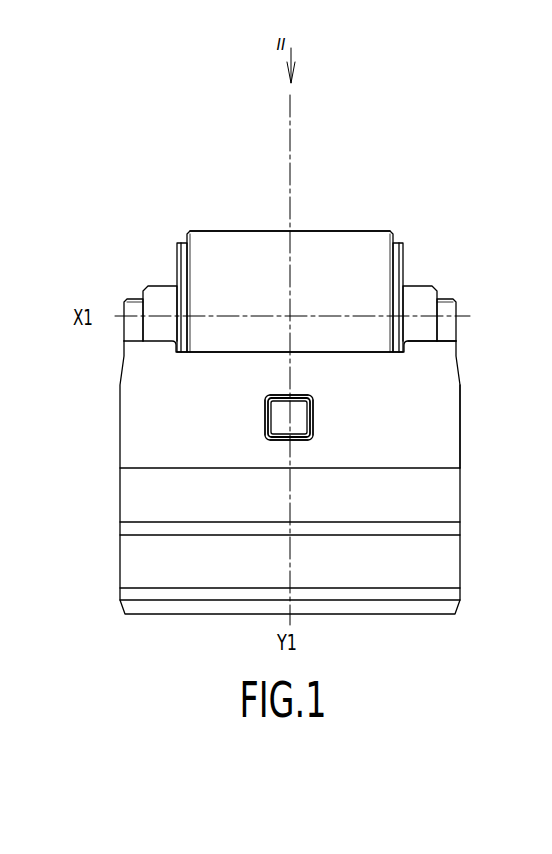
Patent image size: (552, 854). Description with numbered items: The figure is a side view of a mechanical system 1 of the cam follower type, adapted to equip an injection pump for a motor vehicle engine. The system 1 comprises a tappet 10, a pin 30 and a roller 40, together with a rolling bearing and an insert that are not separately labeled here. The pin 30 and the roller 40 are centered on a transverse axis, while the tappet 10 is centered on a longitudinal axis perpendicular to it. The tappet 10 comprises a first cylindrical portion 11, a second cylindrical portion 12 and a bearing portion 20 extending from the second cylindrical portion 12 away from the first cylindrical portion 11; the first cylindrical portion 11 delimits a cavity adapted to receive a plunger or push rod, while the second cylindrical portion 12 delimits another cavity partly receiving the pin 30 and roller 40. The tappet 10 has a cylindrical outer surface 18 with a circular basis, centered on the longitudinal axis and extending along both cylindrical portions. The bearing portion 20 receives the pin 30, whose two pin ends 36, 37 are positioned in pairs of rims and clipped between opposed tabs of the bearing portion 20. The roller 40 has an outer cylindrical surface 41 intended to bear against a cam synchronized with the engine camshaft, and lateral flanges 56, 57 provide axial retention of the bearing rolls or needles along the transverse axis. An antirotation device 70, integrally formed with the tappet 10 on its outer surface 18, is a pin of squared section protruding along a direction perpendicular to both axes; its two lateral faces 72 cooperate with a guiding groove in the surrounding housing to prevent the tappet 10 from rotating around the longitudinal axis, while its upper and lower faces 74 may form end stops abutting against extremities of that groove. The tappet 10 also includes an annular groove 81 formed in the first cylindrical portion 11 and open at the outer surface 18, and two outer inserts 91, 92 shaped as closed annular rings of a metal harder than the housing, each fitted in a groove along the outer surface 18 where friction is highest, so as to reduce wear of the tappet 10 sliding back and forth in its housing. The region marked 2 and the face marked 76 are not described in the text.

The mechanical system 1 is at (98, 165).
The housing middle section 2 is at (378, 522).
The tappet 10 is at (185, 643).
The first cylindrical portion 11 is at (445, 598).
The second cylindrical portion 12 is at (440, 360).
The cylindrical outer surface 18 is at (462, 440).
The bearing portion 20 is at (485, 276).
The pin 30 is at (160, 298).
The pin end 36 is at (143, 299).
The pin end 37 is at (415, 297).
The roller 40 is at (237, 233).
The outer cylindrical surface 41 is at (337, 212).
The lateral flange 56 is at (171, 256).
The lateral flange 57 is at (403, 255).
The antirotation device 70 is at (313, 422).
The lateral faces 72 is at (256, 408).
The upper and lower faces 74 is at (280, 385).
The boss bottom face 76 is at (279, 454).
The annular groove 81 is at (425, 585).
The outer insert 91 is at (120, 558).
The outer insert 92 is at (120, 481).